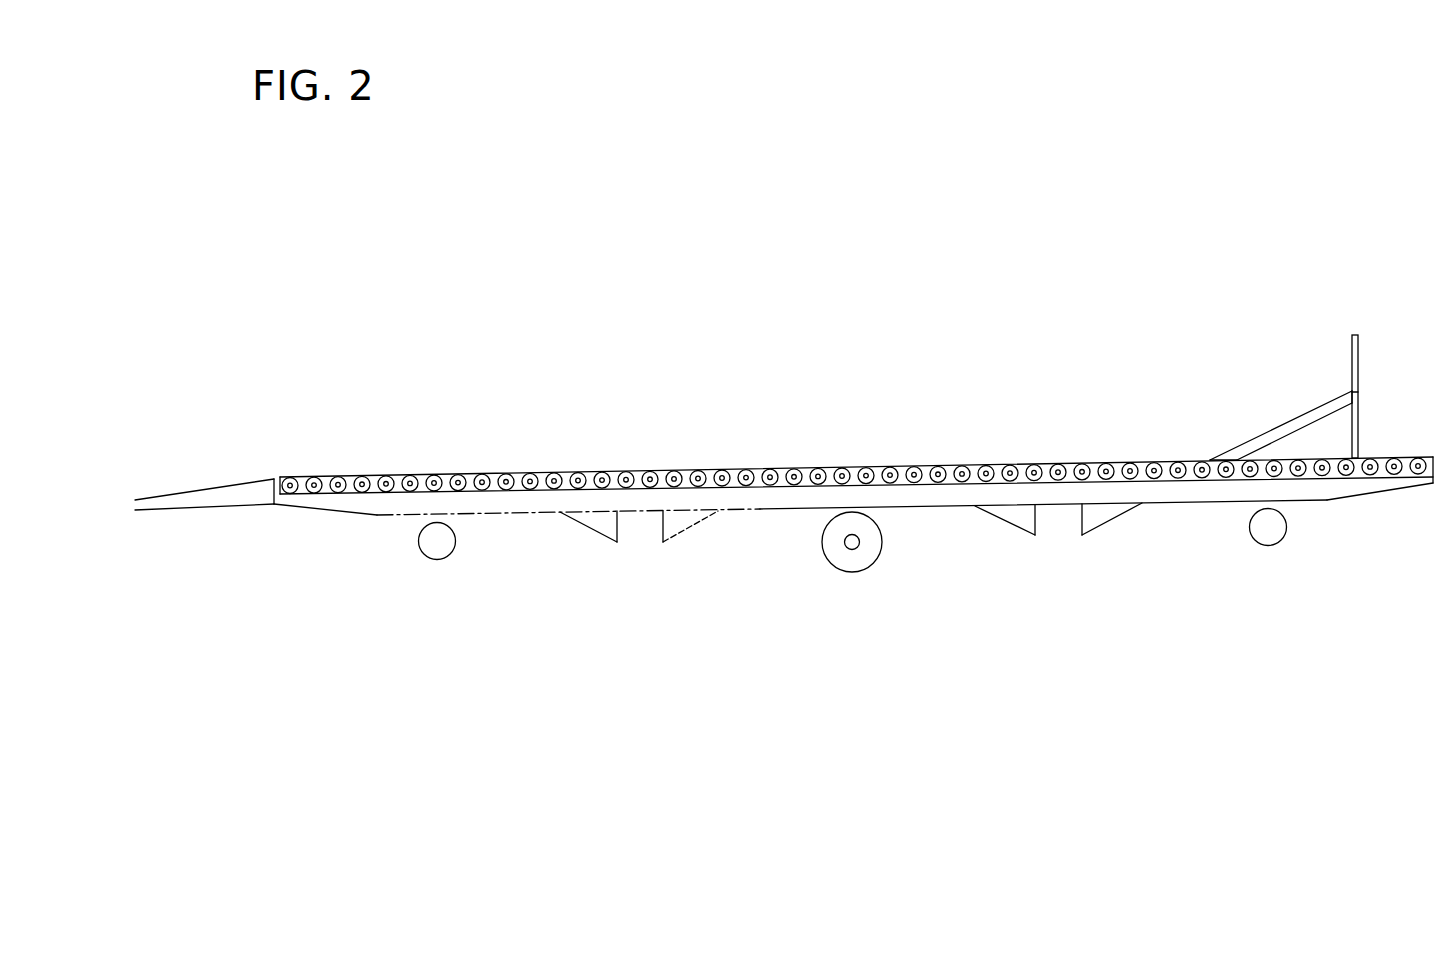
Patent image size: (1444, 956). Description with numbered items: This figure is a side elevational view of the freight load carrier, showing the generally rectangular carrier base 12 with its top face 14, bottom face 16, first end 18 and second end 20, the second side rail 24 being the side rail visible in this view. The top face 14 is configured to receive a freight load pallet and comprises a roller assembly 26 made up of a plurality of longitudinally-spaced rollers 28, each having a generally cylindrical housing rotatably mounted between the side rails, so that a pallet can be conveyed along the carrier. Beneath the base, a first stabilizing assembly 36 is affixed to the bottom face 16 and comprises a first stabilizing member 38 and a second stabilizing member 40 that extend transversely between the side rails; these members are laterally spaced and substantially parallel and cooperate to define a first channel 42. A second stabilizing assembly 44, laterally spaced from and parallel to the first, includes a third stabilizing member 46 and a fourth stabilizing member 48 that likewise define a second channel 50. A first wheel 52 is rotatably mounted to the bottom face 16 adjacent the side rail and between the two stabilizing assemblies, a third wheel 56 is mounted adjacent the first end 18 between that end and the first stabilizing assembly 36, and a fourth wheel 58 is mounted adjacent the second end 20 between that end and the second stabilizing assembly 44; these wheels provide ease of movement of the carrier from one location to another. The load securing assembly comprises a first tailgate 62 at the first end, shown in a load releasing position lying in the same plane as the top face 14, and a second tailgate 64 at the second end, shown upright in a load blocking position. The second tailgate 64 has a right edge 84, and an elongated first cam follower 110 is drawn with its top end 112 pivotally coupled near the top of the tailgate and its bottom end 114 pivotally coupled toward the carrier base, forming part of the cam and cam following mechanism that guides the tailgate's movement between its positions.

The carrier base 12 is at (290, 468).
The top face 14 is at (472, 472).
The bottom face 16 is at (343, 510).
The first end 18 is at (273, 503).
The second end 20 is at (1432, 484).
The second side rail 24 is at (755, 502).
The roller assembly 26 is at (825, 468).
The rollers 28 is at (889, 470).
The first stabilizing assembly 36 is at (637, 574).
The first stabilizing member 38 is at (593, 530).
The second stabilizing member 40 is at (690, 542).
The first channel 42 is at (640, 530).
The second stabilizing assembly 44 is at (1058, 570).
The third stabilizing member 46 is at (1025, 522).
The fourth stabilizing member 48 is at (1105, 522).
The second channel 50 is at (1058, 523).
The first wheel 52 is at (852, 562).
The third wheel 56 is at (437, 567).
The fourth wheel 58 is at (1273, 542).
The first tailgate 62 is at (183, 493).
The second tailgate 64 is at (1358, 392).
The right edge 84 is at (1358, 428).
The first cam follower 110 is at (1277, 425).
The top end 112 is at (1350, 390).
The bottom end 114 is at (1205, 460).